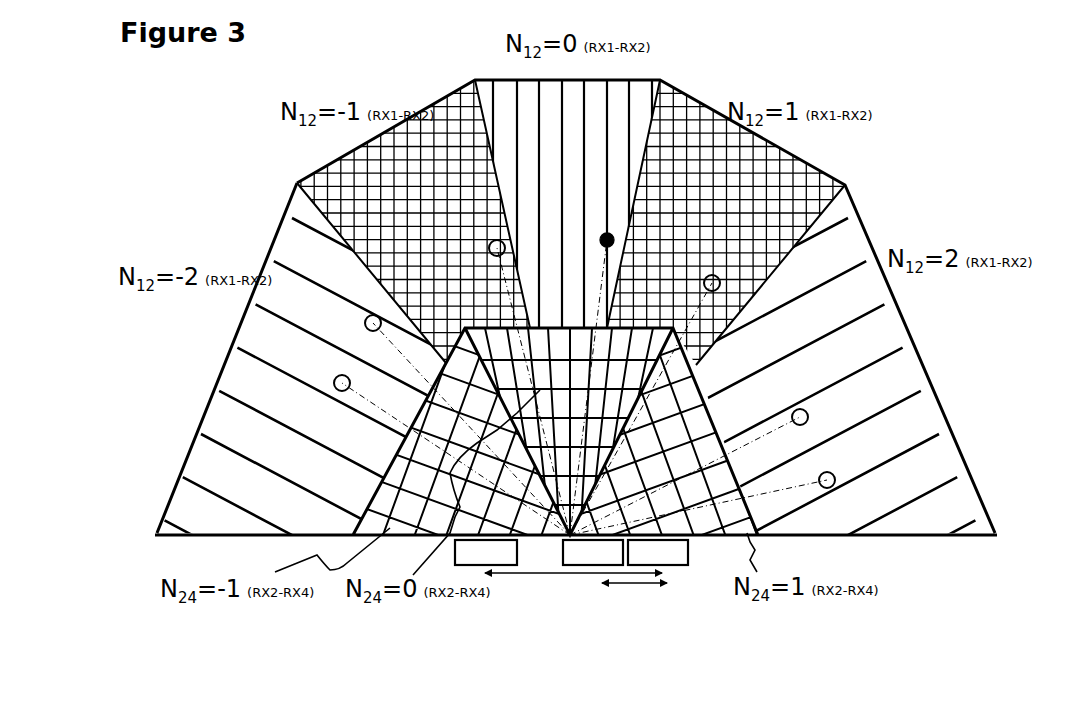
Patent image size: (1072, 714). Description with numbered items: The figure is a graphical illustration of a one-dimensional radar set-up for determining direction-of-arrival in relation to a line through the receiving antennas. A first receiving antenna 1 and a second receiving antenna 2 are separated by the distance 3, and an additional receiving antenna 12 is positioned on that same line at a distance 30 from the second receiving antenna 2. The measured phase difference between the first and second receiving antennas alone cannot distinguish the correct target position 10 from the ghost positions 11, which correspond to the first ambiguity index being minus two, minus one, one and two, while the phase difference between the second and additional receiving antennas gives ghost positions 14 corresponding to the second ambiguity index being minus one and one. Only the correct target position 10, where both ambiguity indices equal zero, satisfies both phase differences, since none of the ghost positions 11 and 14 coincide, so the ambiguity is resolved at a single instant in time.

The receiving antenna 1 is at (497, 574).
The receiving antenna 2 is at (695, 567).
The distance 3 is at (533, 574).
The receiving antenna 12 is at (590, 567).
The distance 30 is at (650, 588).
The target position 10 is at (609, 233).
The ghost positions 11 is at (877, 556).
The ghost positions 14 is at (940, 387).